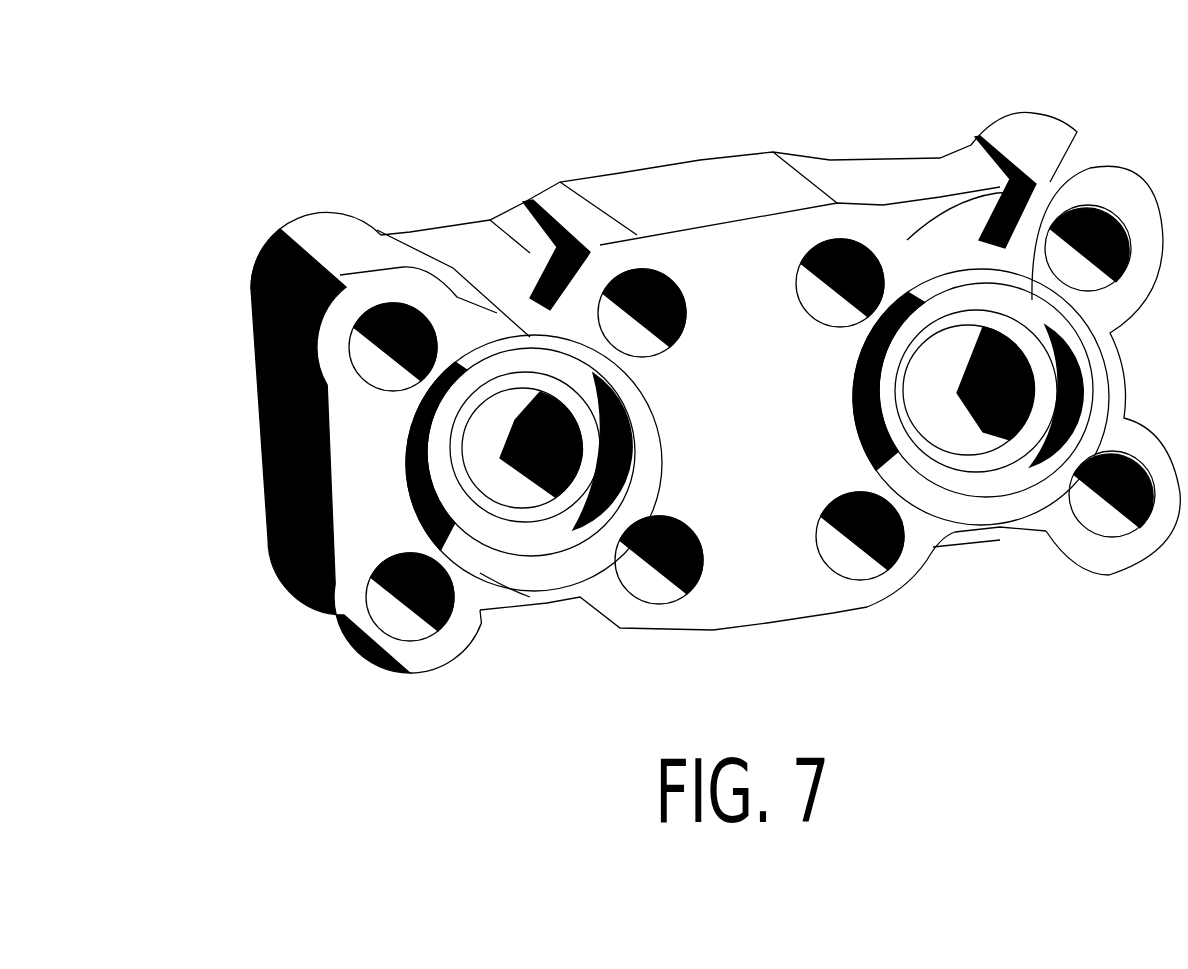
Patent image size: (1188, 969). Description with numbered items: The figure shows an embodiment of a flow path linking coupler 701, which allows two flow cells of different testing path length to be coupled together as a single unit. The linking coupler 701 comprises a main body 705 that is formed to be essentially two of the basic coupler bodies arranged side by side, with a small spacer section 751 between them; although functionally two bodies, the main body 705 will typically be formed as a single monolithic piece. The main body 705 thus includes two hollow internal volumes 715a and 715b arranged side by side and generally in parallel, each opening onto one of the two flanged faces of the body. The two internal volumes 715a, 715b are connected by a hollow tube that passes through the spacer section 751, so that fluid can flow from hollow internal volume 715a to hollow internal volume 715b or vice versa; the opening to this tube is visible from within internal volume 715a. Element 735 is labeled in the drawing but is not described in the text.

The linking coupler 701 is at (672, 396).
The main body 705 is at (615, 177).
The hollow internal volume 715a is at (530, 508).
The hollow internal volume 715b is at (977, 433).
The bolt holes / mounting flange 735 is at (500, 457).
The spacer section 751 is at (766, 622).